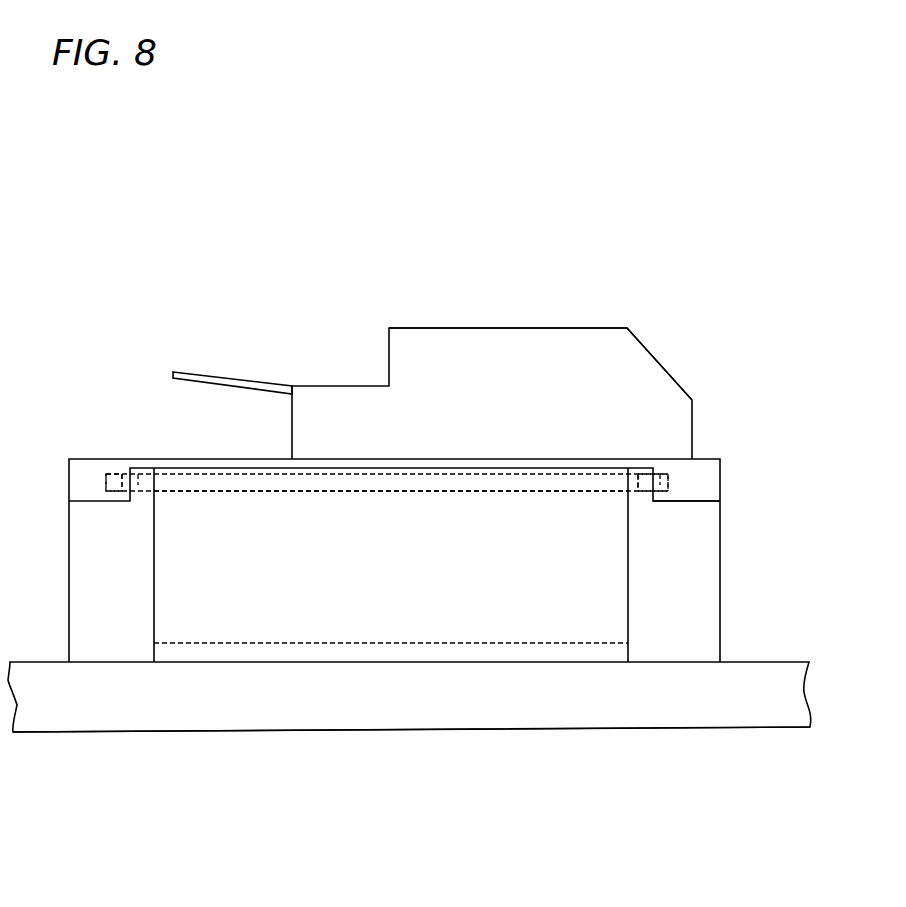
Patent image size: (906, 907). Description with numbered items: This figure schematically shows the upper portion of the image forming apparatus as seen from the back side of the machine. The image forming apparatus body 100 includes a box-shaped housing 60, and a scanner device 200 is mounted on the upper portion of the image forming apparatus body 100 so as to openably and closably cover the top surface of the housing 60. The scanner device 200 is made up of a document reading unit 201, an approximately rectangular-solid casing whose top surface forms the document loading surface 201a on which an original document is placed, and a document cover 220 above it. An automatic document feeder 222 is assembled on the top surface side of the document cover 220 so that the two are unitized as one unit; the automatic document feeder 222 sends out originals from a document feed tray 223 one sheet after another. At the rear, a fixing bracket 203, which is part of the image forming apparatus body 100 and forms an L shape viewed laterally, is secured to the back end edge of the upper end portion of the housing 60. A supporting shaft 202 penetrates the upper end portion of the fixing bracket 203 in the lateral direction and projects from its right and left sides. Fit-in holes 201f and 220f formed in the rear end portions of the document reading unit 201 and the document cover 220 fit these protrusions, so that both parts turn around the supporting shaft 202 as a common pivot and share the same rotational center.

The image forming apparatus body 100 is at (776, 660).
The housing 60 is at (748, 661).
The scanner device 200 is at (112, 441).
The document reading unit 201 is at (78, 608).
The document loading surface 201a is at (698, 501).
The fit-in hole 201f is at (148, 481).
The supporting shaft 202 is at (632, 491).
The fixing bracket 203 is at (237, 610).
The document cover 220 is at (700, 458).
The fit-in hole 220f is at (104, 482).
The automatic document feeder 222 is at (518, 328).
The document feed tray 223 is at (240, 378).